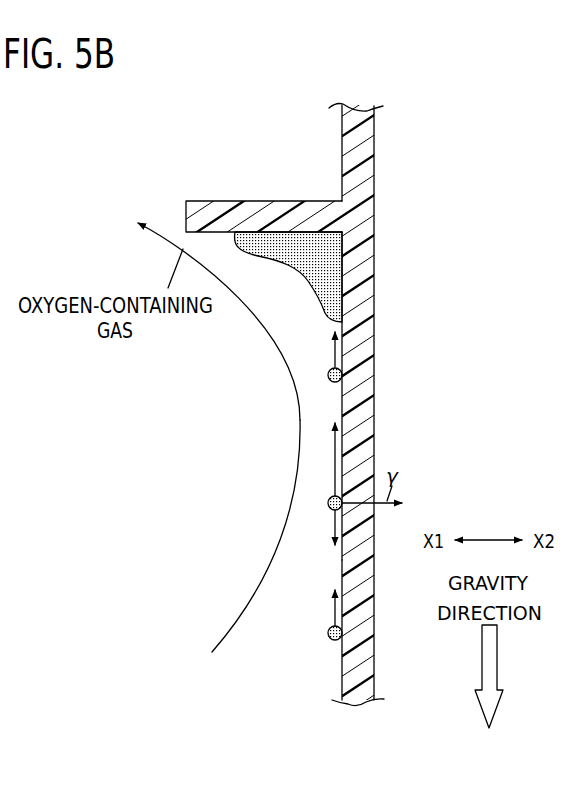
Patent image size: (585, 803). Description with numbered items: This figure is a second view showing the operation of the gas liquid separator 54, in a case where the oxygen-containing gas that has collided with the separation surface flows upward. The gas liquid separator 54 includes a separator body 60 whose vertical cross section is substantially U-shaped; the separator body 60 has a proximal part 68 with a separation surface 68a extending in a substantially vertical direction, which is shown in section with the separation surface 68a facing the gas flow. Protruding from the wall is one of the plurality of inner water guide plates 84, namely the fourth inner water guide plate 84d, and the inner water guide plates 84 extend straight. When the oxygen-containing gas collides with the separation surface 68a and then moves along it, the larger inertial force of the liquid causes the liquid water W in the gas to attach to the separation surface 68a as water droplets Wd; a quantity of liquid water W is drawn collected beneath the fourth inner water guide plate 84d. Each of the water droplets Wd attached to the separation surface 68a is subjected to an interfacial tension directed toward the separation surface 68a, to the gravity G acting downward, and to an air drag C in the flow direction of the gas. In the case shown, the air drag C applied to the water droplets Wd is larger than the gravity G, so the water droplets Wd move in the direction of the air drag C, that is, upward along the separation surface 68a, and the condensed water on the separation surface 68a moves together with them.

The gas liquid separator 54 is at (368, 101).
The separator body 60 is at (377, 148).
The proximal part 68 is at (369, 283).
The separation surface 68a is at (342, 668).
The fourth inner water guide plate 84d is at (228, 200).
The inner water guide plates 84 is at (251, 192).
The liquid water W is at (325, 275).
The water droplets Wd is at (329, 502).
The air drag C is at (334, 440).
The gravity G is at (333, 527).